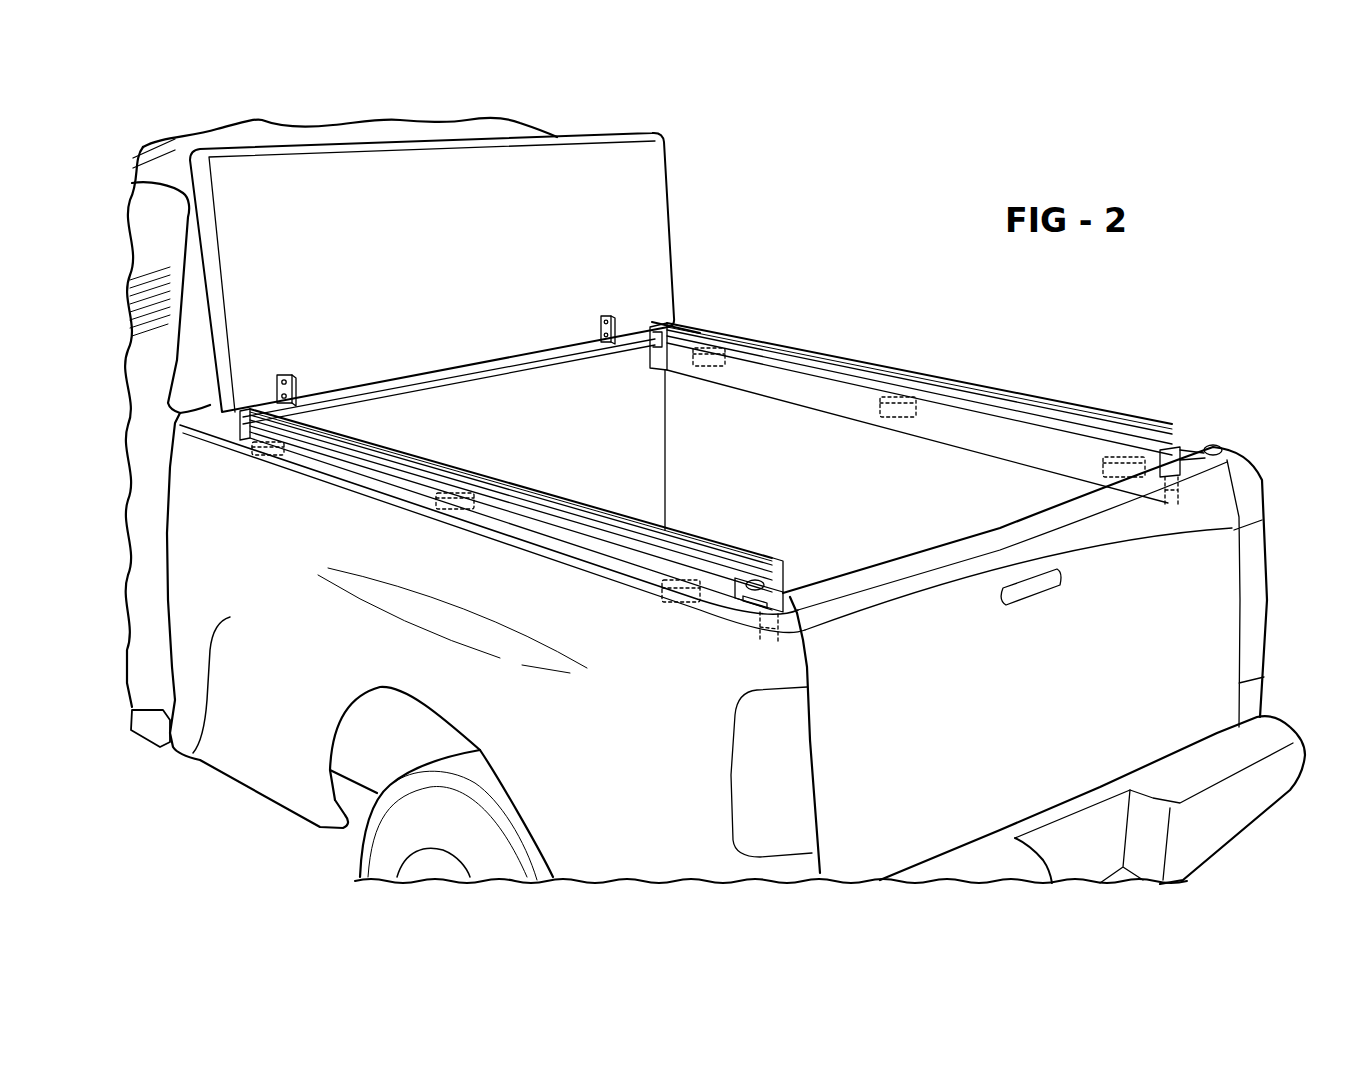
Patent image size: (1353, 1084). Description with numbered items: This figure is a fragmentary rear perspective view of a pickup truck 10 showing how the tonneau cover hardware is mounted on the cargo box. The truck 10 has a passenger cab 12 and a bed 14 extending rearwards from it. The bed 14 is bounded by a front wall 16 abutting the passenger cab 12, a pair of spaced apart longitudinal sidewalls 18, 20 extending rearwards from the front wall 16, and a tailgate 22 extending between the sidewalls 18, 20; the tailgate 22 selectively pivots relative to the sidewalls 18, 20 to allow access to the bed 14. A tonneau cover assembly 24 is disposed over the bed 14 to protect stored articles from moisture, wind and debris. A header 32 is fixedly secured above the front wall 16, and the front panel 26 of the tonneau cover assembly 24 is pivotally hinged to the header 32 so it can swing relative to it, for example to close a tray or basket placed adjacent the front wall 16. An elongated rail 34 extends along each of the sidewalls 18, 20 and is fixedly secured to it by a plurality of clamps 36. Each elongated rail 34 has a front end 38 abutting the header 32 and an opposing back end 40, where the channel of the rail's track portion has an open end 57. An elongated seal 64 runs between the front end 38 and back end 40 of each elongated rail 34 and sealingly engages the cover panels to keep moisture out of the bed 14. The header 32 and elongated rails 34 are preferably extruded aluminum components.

The pickup truck 10 is at (904, 187).
The passenger cab 12 is at (155, 143).
The bed 14 is at (978, 492).
The front wall 16 is at (561, 436).
The sidewall 18 is at (193, 753).
The sidewall 20 is at (813, 430).
The tailgate 22 is at (903, 587).
The tonneau cover assembly 24 is at (790, 340).
The front panel 26 is at (597, 135).
The header 32 is at (500, 368).
The elongated rail 34 is at (940, 383).
The clamp 36 is at (266, 456).
The front end 38 is at (687, 333).
The back end 40 is at (1177, 447).
The open end 57 is at (1160, 477).
The elongated seal 64 is at (1093, 417).